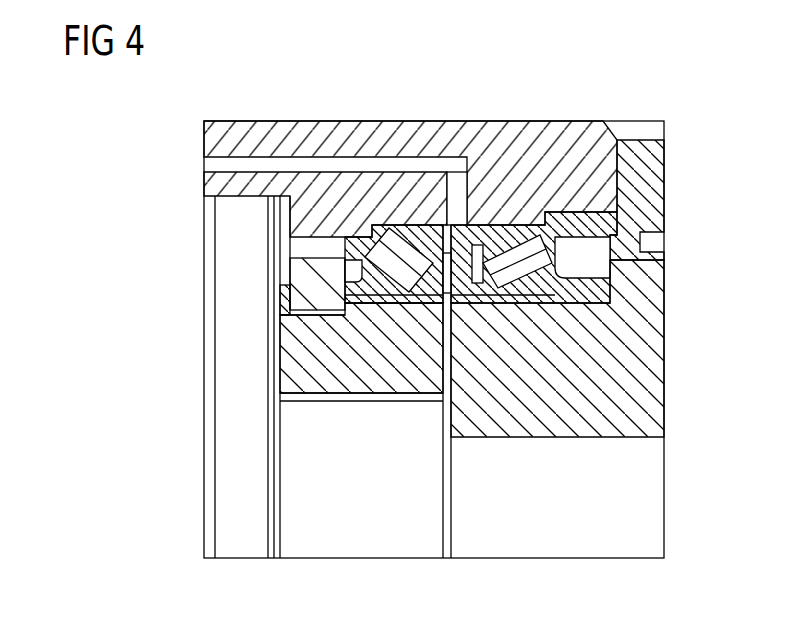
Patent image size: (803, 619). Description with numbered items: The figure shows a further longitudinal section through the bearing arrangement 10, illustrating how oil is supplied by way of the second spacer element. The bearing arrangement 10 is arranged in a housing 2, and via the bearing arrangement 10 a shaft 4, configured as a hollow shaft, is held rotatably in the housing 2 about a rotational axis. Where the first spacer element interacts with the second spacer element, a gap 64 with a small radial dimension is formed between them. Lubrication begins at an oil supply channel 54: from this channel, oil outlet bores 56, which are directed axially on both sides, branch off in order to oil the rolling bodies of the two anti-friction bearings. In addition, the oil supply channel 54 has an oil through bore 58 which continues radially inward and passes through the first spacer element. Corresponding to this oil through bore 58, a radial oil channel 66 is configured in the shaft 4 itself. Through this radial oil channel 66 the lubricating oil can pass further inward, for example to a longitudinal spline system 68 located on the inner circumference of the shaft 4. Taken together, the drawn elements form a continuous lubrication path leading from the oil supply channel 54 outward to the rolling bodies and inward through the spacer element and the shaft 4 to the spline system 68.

The bearing arrangement 10 is at (340, 103).
The housing 2 is at (485, 160).
The shaft 4 is at (643, 305).
The oil supply channel 54 is at (477, 243).
The oil outlet bores 56 is at (440, 302).
The oil through bore 58 is at (452, 308).
The gap 64 is at (433, 317).
The radial oil channel 66 is at (453, 338).
The longitudinal spline system 68 is at (325, 396).